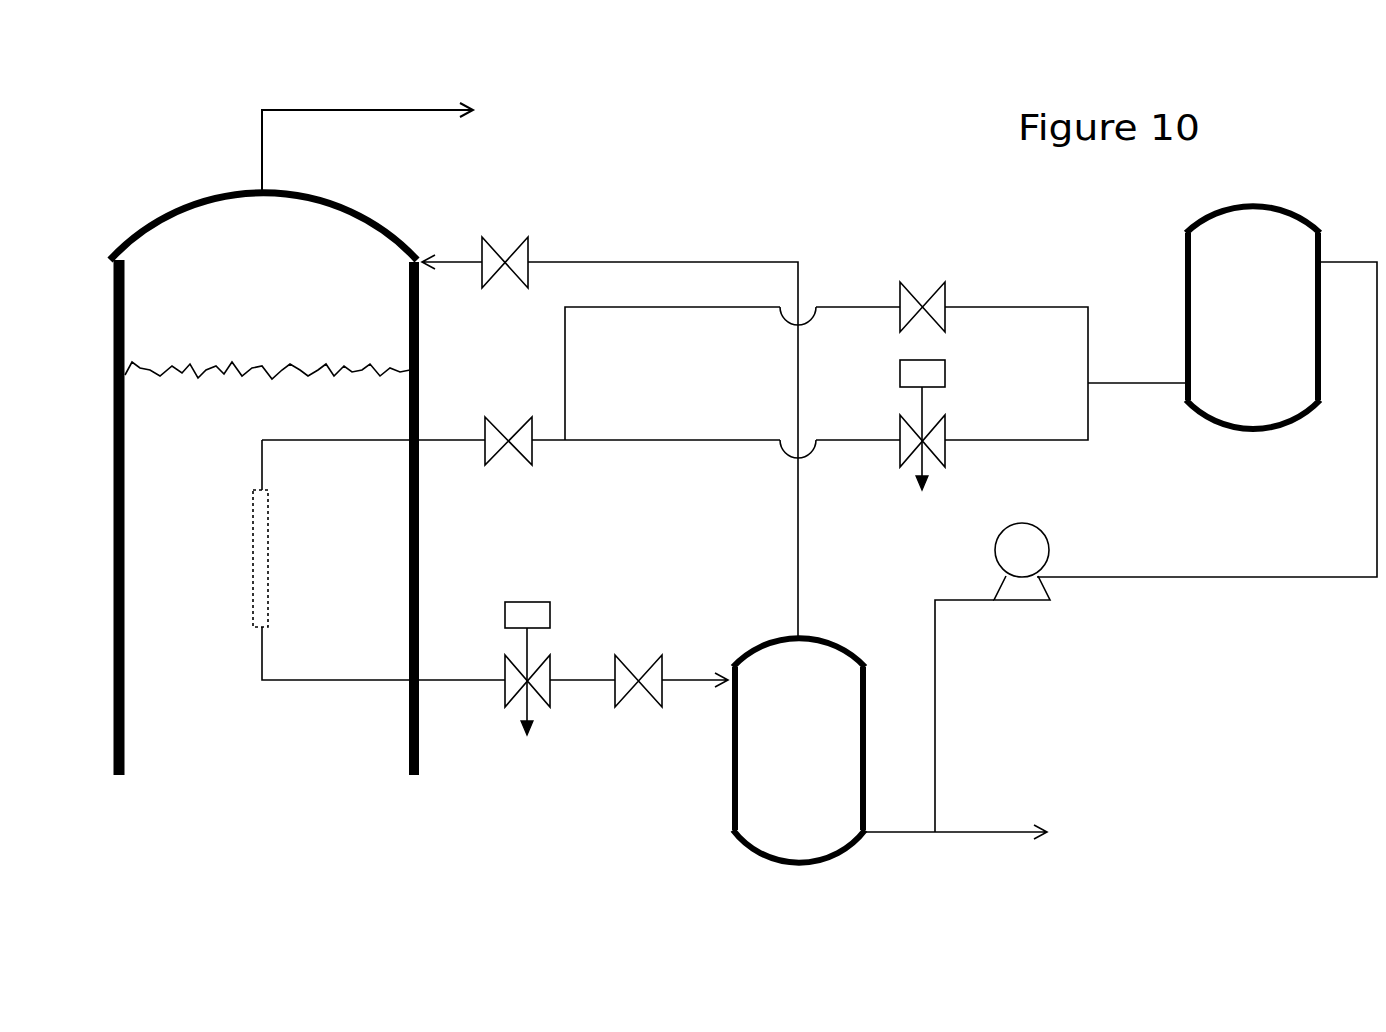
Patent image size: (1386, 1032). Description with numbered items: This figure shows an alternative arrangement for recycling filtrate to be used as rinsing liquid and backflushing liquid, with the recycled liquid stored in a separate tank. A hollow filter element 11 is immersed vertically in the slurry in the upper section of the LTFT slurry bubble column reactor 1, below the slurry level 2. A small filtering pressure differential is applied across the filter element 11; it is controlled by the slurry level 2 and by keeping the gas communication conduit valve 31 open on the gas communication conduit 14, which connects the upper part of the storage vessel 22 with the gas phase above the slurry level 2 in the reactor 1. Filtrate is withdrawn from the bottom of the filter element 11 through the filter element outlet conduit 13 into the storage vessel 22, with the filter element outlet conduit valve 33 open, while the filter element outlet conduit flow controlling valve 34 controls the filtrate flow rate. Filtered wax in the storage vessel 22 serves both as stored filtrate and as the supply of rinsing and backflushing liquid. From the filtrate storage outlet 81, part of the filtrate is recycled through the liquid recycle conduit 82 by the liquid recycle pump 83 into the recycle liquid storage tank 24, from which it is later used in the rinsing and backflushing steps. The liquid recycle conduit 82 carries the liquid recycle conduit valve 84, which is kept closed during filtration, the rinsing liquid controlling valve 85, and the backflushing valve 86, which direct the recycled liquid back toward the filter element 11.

The LTFT slurry bubble column reactor 1 is at (263, 484).
The slurry level 2 is at (267, 349).
The filter element 11 is at (282, 533).
The filter element outlet conduit 13 is at (383, 653).
The gas communication conduit 14 is at (663, 431).
The storage vessel 22 is at (799, 750).
The storage vessel 24 is at (1207, 391).
The gas communication conduit valve 31 is at (476, 234).
The filter element outlet conduit valve 33 is at (671, 646).
The filter element outlet conduit flow controlling valve 34 is at (560, 642).
The filtrate storage outlet 81 is at (955, 812).
The liquid recycle conduit 82 is at (964, 716).
The liquid recycle pump 83 is at (1021, 540).
The liquid recycle conduit valve 84 is at (581, 386).
The rinsing liquid controlling valve 85 is at (955, 424).
The backflushing valve 86 is at (992, 336).